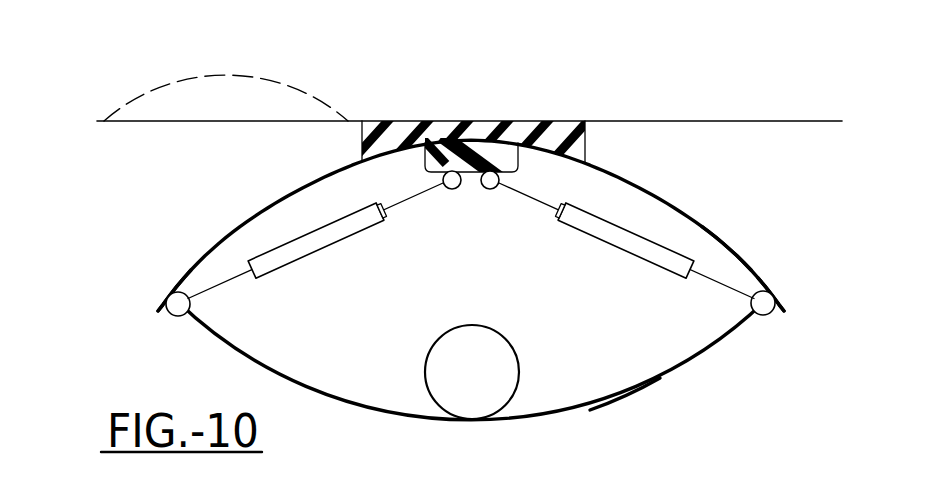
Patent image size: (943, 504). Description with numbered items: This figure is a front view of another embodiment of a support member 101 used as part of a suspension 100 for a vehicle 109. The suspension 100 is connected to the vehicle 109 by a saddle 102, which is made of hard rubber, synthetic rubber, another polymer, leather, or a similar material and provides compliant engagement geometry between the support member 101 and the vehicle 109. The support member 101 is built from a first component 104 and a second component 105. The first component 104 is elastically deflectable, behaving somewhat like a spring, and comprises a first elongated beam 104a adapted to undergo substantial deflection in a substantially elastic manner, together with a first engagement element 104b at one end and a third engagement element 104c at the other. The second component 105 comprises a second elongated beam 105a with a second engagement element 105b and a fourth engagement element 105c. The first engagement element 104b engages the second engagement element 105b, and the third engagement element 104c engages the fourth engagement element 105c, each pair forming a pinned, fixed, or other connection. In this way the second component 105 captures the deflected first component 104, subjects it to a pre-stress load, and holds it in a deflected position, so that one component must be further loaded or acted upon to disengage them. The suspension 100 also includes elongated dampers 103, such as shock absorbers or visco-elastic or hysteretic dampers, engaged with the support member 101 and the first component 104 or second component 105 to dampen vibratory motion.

The suspension 100 is at (734, 204).
The support member 101 is at (619, 149).
The saddle 102 is at (362, 136).
The damper 103 is at (280, 264).
The first component 104 is at (674, 189).
The first elongated beam 104a is at (736, 245).
The first engagement element 104b is at (780, 290).
The third engagement element 104c is at (167, 290).
The second component 105 is at (558, 417).
The second elongated beam 105a is at (629, 394).
The second engagement element 105b is at (771, 317).
The fourth engagement element 105c is at (176, 325).
The vehicle 109 is at (188, 109).